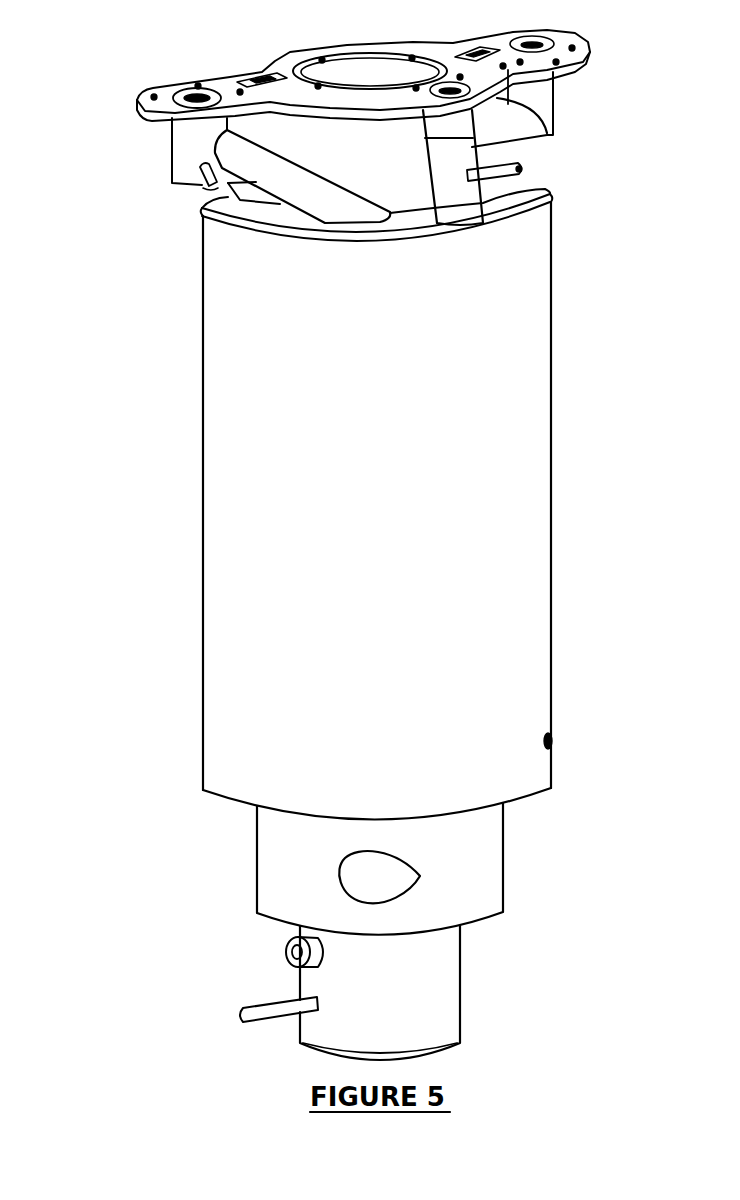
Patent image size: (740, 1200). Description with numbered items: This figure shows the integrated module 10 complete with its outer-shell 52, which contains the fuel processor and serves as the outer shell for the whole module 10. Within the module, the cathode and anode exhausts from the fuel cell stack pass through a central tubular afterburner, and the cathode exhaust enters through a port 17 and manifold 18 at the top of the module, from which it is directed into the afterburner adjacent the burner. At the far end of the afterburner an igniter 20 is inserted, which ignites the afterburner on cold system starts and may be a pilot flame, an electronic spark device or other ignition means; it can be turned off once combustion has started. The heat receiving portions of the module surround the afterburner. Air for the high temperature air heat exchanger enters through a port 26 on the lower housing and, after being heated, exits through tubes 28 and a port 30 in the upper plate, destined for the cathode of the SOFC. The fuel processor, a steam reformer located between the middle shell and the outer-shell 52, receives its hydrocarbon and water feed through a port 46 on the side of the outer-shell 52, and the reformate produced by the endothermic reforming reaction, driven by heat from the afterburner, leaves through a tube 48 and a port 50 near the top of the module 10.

The integrated module 10 is at (134, 463).
The port 17 is at (547, 38).
The manifold 18 is at (529, 130).
The igniter 20 is at (290, 952).
The port 26 is at (375, 877).
The tubes 28 is at (303, 200).
The port 30 is at (192, 95).
The port 46 is at (552, 740).
The tube 48 is at (521, 174).
The port 50 is at (520, 105).
The outer-shell 52 is at (386, 512).